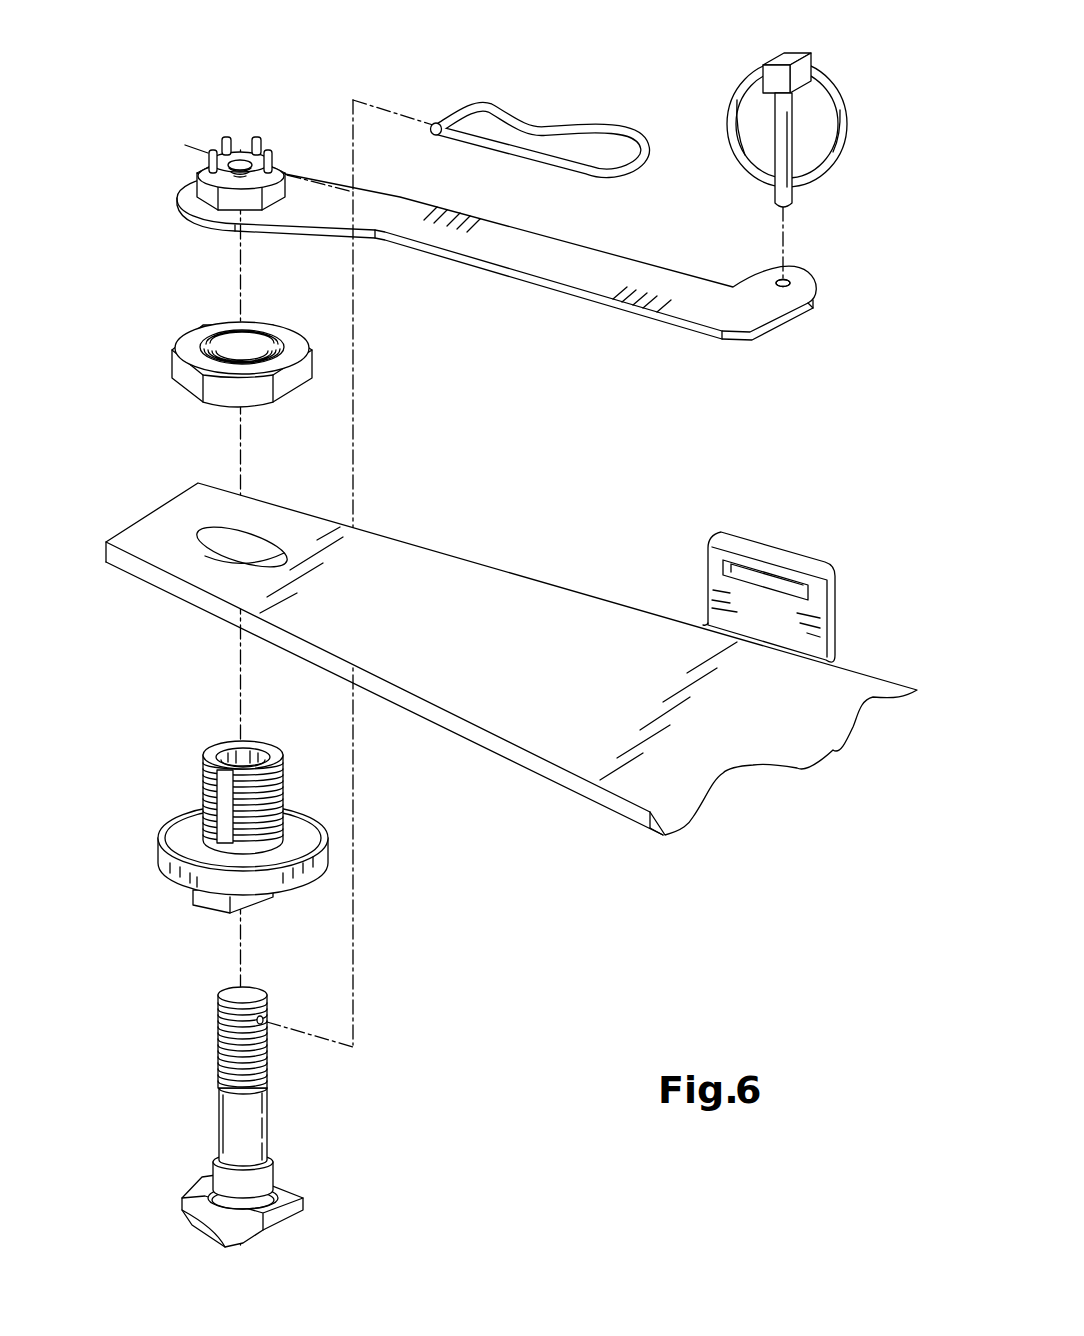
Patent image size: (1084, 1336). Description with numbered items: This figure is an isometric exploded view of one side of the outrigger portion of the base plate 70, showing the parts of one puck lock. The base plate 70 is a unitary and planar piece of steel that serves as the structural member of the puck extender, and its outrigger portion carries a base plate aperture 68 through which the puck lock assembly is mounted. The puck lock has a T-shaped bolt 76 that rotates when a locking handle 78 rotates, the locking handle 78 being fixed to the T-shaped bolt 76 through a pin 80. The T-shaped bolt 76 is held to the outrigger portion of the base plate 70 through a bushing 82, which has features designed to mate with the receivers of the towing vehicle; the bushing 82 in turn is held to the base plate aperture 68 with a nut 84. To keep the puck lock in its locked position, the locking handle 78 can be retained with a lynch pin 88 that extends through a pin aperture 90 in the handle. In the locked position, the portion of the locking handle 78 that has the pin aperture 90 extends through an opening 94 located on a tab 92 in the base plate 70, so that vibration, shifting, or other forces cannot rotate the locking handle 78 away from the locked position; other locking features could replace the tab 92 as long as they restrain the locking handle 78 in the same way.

The base plate aperture 68 is at (207, 528).
The base plate 70 is at (430, 575).
The T-shaped bolt 76 is at (265, 1120).
The locking handle 78 is at (545, 262).
The pin 80 is at (562, 128).
The bushing 82 is at (158, 850).
The nut 84 is at (170, 364).
The lynch pin 88 is at (850, 145).
The pin aperture 90 is at (813, 287).
The tab 92 is at (714, 562).
The opening 94 is at (770, 573).